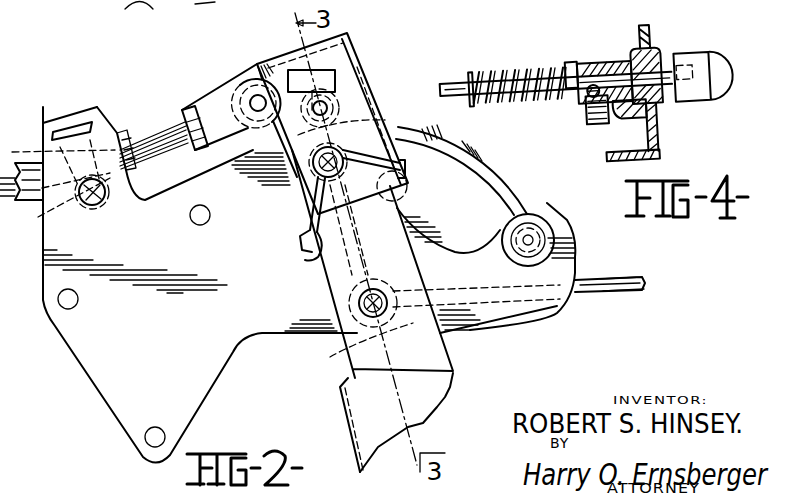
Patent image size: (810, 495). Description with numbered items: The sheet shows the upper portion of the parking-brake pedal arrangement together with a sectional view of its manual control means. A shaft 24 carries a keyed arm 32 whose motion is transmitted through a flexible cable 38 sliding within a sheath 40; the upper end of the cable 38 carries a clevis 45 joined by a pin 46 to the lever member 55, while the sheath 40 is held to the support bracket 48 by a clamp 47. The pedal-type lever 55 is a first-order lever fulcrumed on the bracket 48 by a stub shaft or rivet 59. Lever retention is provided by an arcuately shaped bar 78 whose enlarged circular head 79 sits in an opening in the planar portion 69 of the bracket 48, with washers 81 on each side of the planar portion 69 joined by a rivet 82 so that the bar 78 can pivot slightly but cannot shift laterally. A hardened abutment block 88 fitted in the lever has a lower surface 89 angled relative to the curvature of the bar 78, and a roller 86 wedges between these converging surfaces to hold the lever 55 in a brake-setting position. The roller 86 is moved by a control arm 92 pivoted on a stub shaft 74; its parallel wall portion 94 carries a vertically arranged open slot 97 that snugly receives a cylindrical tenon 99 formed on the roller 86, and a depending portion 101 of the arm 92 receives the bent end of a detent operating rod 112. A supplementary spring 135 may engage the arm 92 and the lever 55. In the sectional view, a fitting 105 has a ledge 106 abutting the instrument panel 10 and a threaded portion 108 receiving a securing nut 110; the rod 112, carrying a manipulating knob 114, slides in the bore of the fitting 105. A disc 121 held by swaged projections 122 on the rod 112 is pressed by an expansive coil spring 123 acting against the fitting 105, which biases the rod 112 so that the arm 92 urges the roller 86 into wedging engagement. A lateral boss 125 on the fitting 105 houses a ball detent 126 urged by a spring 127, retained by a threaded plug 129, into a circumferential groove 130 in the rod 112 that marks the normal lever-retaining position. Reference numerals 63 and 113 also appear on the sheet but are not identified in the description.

In FIG. 2, the shaft 24 is at (118, 8).
In FIG. 2, the arm 32 is at (190, 8).
In FIG. 2, the sheath 40 is at (26, 163).
In FIG. 2, the flexible cable 38 is at (132, 140).
In FIG. 2, the clevis 45 is at (197, 116).
In FIG. 2, the pin 46 is at (256, 102).
In FIG. 2, the clamp 47 is at (55, 197).
In FIG. 2, the hardened abutment block 88 is at (305, 50).
In FIG. 2, the lower surface 89 is at (262, 178).
In FIG. 2, the roller 86 is at (375, 94).
In FIG. 2, the control lever or arm 92 is at (384, 77).
In FIG. 2, the parallel wall portion 94 is at (351, 58).
In FIG. 2, the open slot 97 is at (342, 62).
In FIG. 2, the cylindrical tenon 99 is at (328, 109).
In FIG. 2, the stub shaft or rivet 74 is at (318, 174).
In FIG. 2, the spring 135 is at (310, 254).
In FIG. 2, the depending arm or portion 101 is at (402, 208).
In FIG. 2, the arcuately shaped bar 78 is at (418, 143).
In FIG. 2, the planar portion 69 is at (441, 237).
In FIG. 2, the rivet 82 is at (520, 253).
In FIG. 2, the circular head portion 79 is at (546, 239).
In FIG. 2, the washers or discs 81 is at (550, 255).
In FIG. 2, the detent operating rod 112 is at (594, 290).
In FIG. 2, the support or bracket 48 is at (268, 337).
In FIG. 2, the stub shaft or rivet 59 is at (358, 327).
In FIG. 2, the lever member 55 is at (338, 414).
In FIG. 2, the strap edge 63 is at (352, 441).
In FIG. 4, the disc or washer 121 is at (463, 78).
In FIG. 4, the projections 122 is at (466, 104).
In FIG. 4, the expansive coil spring 123 is at (517, 108).
In FIG. 4, the circumferential recess or groove 130 is at (569, 74).
In FIG. 4, the fitting 105 is at (604, 70).
In FIG. 4, the threaded portion 108 is at (664, 62).
In FIG. 4, the securing nut 110 is at (652, 42).
In FIG. 4, the manipulating knob or button 114 is at (700, 60).
In FIG. 4, the knob socket 113 is at (675, 99).
In FIG. 4, the shoulder or ledge 106 is at (656, 130).
In FIG. 4, the instrument panel 10 is at (658, 153).
In FIG. 4, the expansive coil spring 127 is at (632, 118).
In FIG. 4, the ball 126 is at (584, 103).
In FIG. 4, the boss 125 is at (587, 118).
In FIG. 4, the screw or threaded plug 129 is at (600, 126).